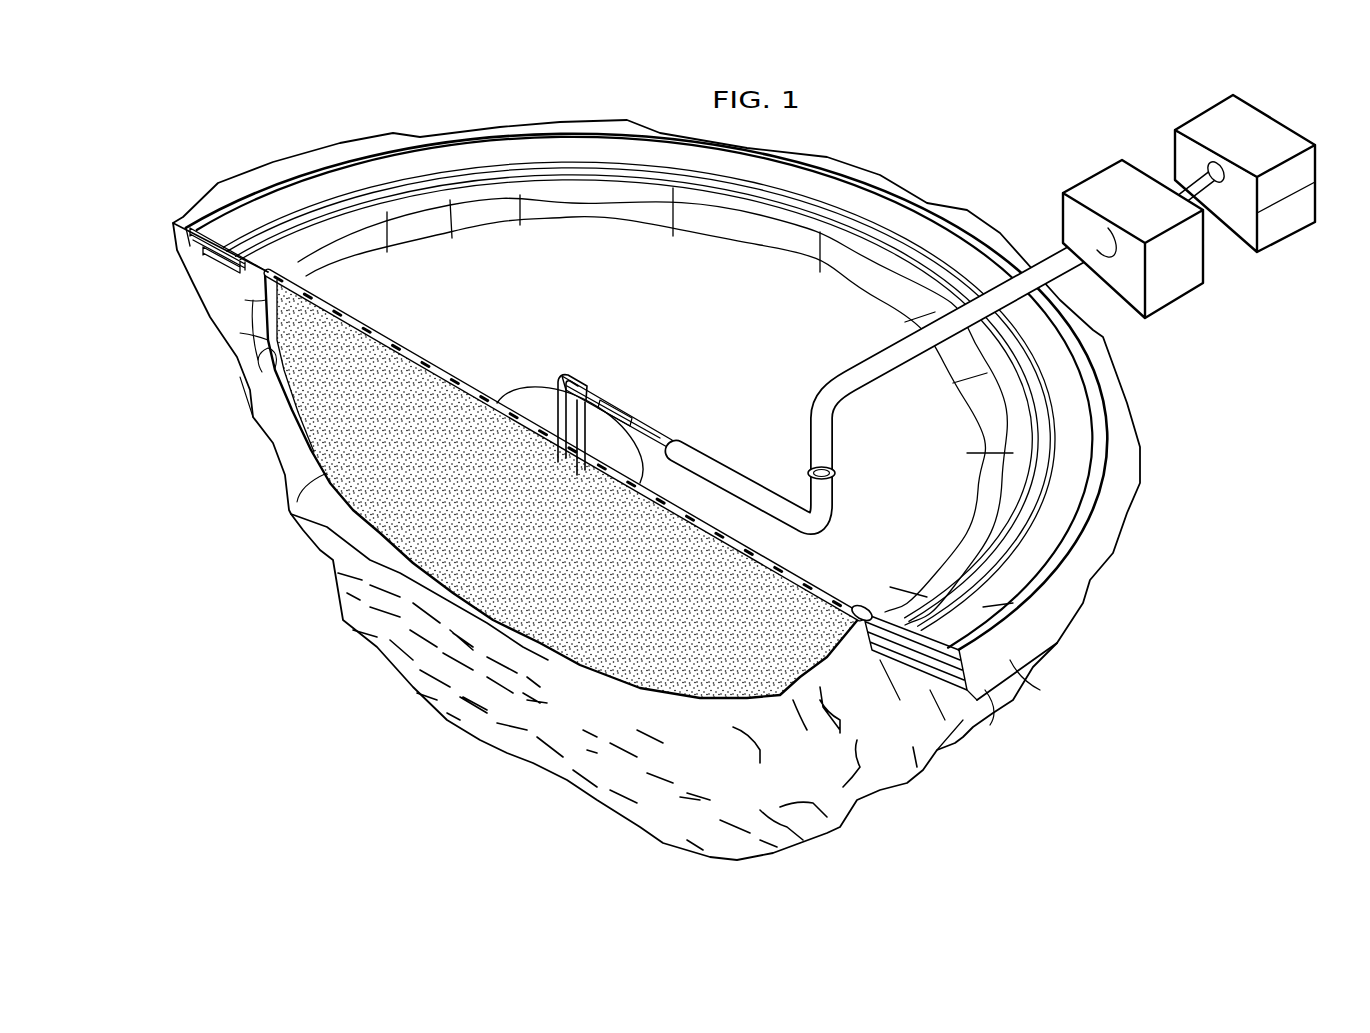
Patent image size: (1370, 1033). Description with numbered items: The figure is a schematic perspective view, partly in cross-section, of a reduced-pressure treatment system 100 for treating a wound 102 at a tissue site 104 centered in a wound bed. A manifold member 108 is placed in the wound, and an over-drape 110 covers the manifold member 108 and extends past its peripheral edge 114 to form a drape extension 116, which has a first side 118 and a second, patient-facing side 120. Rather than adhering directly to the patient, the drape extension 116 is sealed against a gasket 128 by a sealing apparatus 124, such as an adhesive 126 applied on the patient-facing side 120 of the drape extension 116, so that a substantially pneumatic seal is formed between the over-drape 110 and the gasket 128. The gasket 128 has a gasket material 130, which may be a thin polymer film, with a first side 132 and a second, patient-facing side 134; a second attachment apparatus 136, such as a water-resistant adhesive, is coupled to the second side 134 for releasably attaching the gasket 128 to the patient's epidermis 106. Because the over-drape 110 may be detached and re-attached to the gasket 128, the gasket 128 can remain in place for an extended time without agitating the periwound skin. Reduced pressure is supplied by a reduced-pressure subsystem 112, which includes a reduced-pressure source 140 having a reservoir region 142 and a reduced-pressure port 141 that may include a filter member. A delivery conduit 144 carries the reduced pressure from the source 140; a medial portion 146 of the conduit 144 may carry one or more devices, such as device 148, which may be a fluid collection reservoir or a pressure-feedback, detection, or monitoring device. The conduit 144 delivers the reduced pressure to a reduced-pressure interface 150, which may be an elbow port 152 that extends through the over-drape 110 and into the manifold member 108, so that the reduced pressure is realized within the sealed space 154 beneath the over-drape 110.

The reduced-pressure treatment system 100 is at (645, 417).
The wound 102 is at (312, 455).
The tissue site 104 is at (587, 672).
The epidermis 106 is at (989, 692).
The manifold member 108 is at (537, 559).
The over-drape 110 is at (392, 348).
The reduced-pressure subsystem 112 is at (952, 320).
The peripheral edge 114 is at (252, 407).
The drape extension 116 is at (348, 176).
The first side 118 is at (1032, 666).
The second, patient-facing side 120 is at (860, 607).
The sealing apparatus 124 is at (906, 684).
The adhesive 126 is at (205, 226).
The gasket 128 is at (183, 224).
The gasket material 130 is at (300, 174).
The first side 132 is at (253, 196).
The second, patient-facing side 134 is at (247, 252).
The second attachment apparatus 136 is at (213, 259).
The reduced-pressure source 140 is at (1268, 123).
The reduced-pressure port 141 is at (1236, 184).
The reservoir region 142 is at (1281, 244).
The delivery conduit 144 is at (867, 360).
The medial portion 146 is at (1100, 230).
The device 148 is at (1129, 251).
The reduced-pressure interface 150 is at (560, 374).
The elbow port 152 is at (594, 384).
The sealed space 154 is at (262, 343).